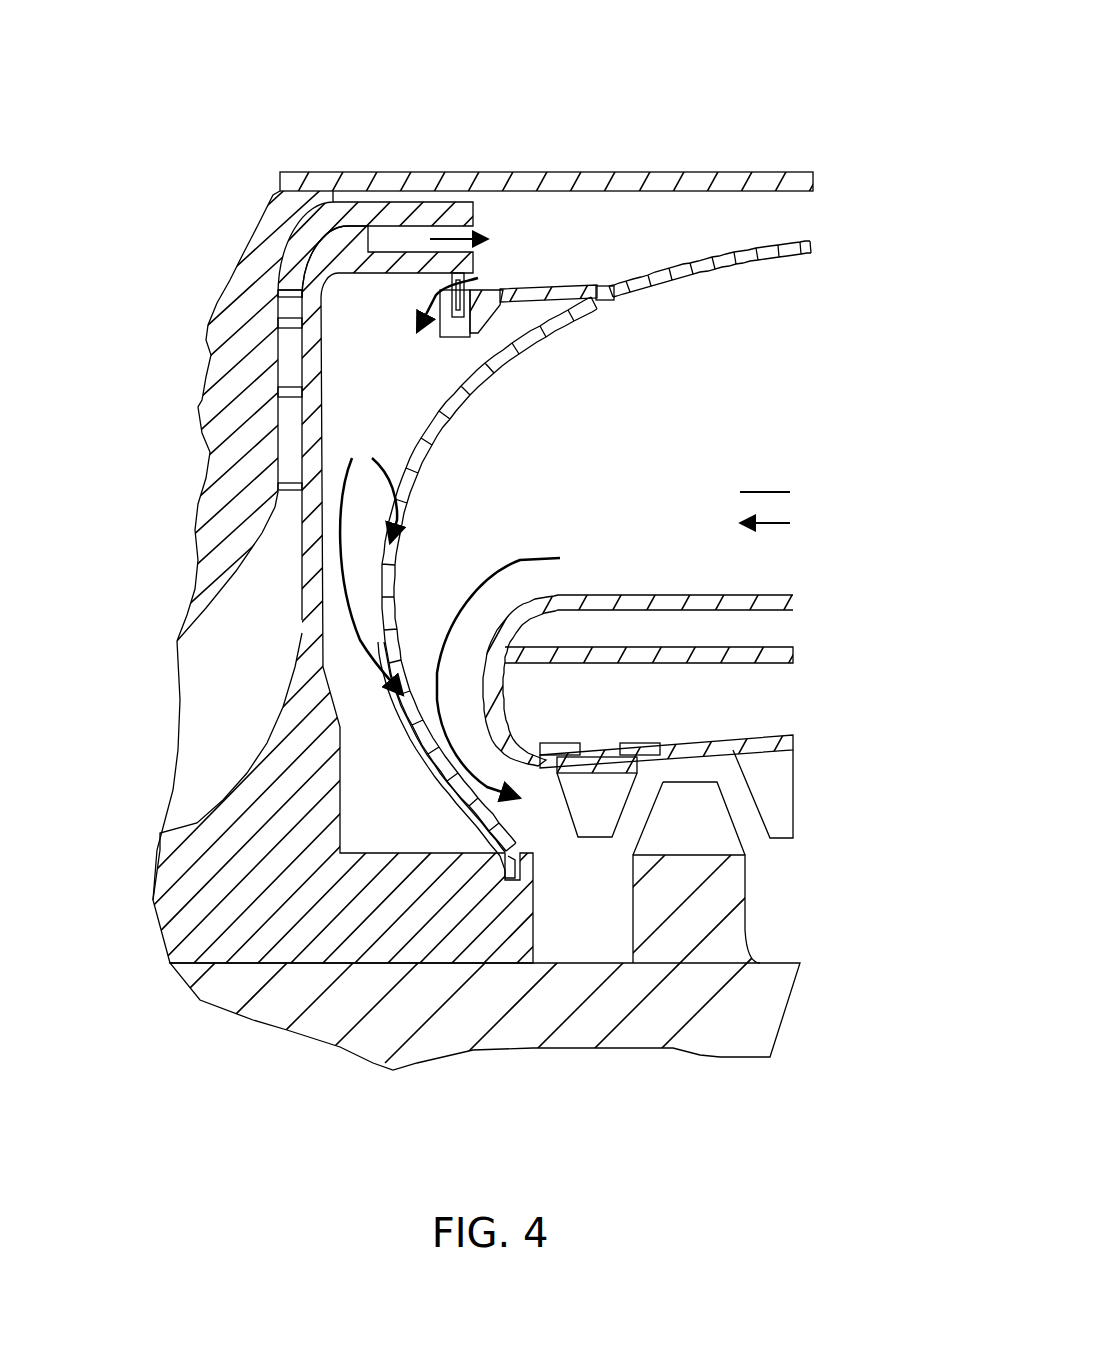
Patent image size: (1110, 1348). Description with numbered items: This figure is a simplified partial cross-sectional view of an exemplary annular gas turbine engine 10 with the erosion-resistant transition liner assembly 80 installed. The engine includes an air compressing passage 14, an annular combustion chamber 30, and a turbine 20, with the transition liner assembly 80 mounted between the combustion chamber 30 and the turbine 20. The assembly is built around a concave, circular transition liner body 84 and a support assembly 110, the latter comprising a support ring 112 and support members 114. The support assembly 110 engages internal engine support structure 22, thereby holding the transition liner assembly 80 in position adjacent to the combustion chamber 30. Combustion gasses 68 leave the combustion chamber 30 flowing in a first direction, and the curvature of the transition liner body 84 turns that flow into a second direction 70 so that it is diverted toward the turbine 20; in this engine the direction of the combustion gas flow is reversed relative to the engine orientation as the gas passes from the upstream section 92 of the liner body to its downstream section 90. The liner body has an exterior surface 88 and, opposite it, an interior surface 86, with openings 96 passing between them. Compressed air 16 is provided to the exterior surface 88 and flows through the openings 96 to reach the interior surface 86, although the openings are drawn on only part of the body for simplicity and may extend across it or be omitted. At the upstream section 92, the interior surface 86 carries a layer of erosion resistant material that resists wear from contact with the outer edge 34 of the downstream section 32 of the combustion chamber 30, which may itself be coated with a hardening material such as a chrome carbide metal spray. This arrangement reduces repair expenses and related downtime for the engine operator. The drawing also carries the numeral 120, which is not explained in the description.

The gas turbine engine 10 is at (181, 81).
The air compressing passage 14 is at (246, 697).
The compressed air 16 is at (480, 292).
The turbine 20 is at (666, 829).
The internal engine support structure 22 is at (445, 283).
The combustion chamber 30 is at (747, 577).
The downstream section 32 is at (680, 292).
The outer edge 34 is at (611, 306).
The combustion gasses 68 is at (766, 527).
The second direction 70 is at (545, 558).
The erosion-resistant transition liner assembly 80 is at (448, 465).
The transition liner body 84 is at (530, 376).
The interior surface 86 is at (370, 575).
The exterior surface 88 is at (385, 745).
The downstream section 90 is at (457, 810).
The upstream section 92 is at (548, 340).
The openings 96 is at (372, 457).
The support assembly 110 is at (587, 277).
The support ring 112 is at (463, 338).
The support members 114 is at (568, 290).
The seal 120 is at (535, 857).